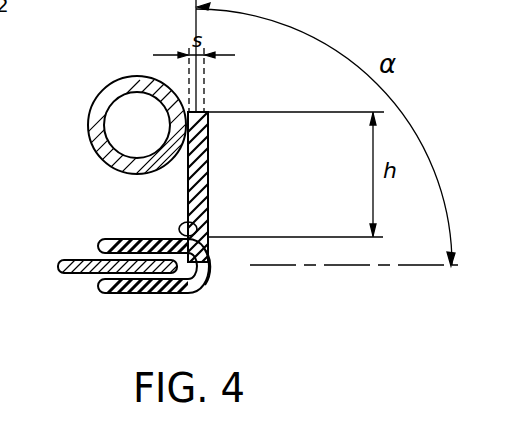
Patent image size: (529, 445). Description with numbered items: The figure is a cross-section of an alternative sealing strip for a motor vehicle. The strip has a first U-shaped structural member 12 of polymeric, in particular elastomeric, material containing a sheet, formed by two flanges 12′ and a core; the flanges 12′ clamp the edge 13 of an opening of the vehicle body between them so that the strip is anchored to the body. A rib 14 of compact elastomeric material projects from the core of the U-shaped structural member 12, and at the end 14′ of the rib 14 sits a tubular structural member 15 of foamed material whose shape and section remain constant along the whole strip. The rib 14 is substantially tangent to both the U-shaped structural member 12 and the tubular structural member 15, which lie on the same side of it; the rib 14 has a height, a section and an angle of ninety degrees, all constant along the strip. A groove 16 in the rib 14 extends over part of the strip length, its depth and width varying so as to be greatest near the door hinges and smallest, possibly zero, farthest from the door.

The first U-shaped structural member 12 is at (133, 295).
The flanges 12′ is at (106, 238).
The edge 13 is at (72, 260).
The rib 14 is at (208, 152).
The end of rib 14′ is at (207, 115).
The tubular structural member 15 is at (132, 76).
The groove 16 is at (208, 222).